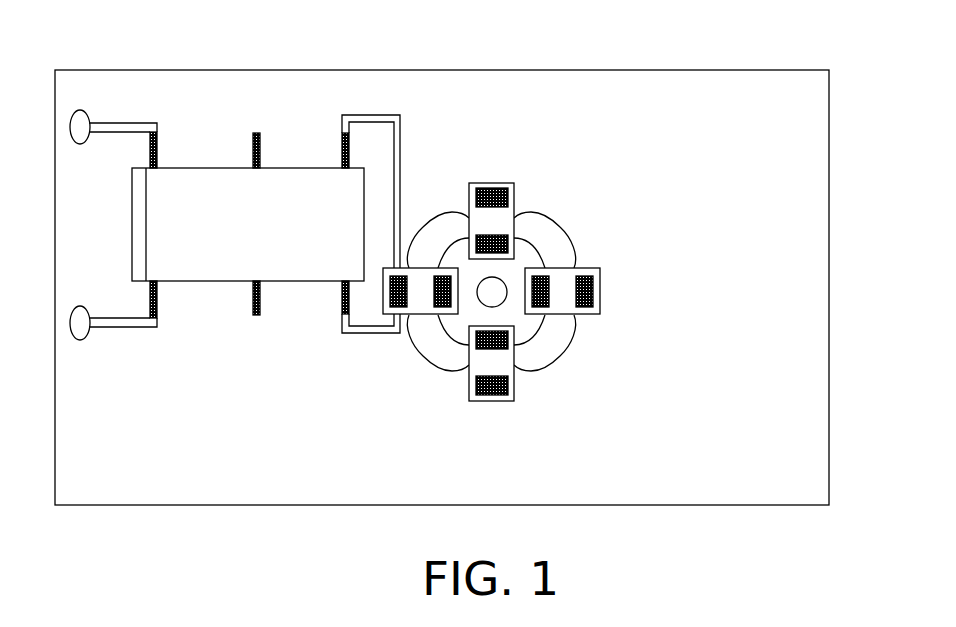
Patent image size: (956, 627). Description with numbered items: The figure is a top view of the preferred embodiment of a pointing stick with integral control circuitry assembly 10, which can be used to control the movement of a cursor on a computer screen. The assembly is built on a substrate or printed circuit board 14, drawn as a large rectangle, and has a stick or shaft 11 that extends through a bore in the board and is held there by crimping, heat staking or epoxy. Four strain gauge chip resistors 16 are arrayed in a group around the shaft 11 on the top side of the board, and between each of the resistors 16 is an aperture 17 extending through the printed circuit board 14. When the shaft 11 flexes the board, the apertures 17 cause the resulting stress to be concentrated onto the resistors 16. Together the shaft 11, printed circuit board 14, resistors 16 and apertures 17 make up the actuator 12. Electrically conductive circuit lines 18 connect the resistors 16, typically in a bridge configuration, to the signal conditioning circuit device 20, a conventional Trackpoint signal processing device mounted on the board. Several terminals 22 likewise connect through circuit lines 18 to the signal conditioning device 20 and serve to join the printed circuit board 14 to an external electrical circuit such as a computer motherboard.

The pointing stick with integral control circuitry assembly 10 is at (742, 48).
The stick or shaft 11 is at (503, 300).
The actuator 12 is at (630, 350).
The printed circuit board 14 is at (829, 232).
The strain gauge chip resistors 16 is at (488, 182).
The aperture 17 is at (558, 220).
The electrically conductive circuit lines 18 is at (108, 327).
The signal conditioning circuit device 20 is at (264, 229).
The terminals 22 is at (78, 145).